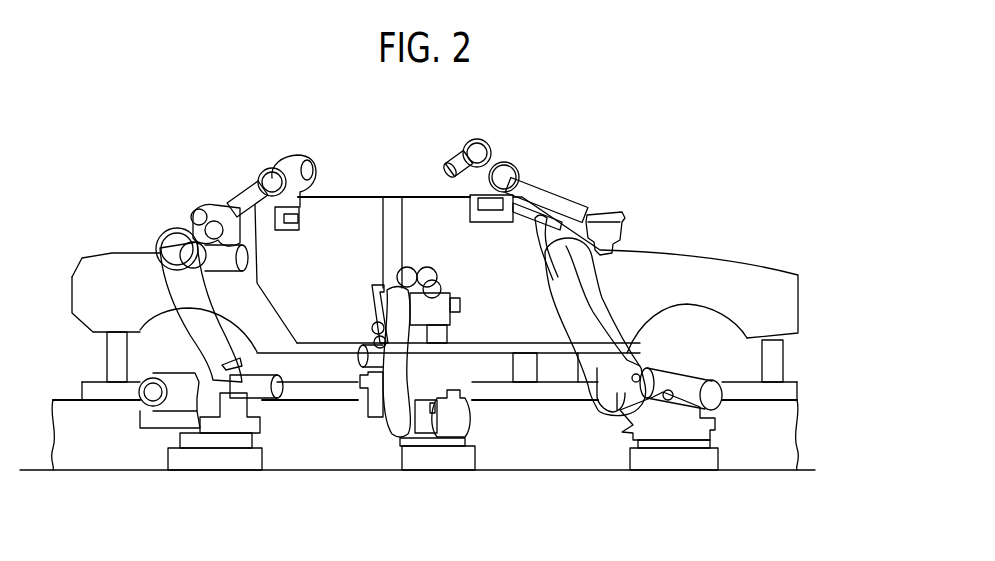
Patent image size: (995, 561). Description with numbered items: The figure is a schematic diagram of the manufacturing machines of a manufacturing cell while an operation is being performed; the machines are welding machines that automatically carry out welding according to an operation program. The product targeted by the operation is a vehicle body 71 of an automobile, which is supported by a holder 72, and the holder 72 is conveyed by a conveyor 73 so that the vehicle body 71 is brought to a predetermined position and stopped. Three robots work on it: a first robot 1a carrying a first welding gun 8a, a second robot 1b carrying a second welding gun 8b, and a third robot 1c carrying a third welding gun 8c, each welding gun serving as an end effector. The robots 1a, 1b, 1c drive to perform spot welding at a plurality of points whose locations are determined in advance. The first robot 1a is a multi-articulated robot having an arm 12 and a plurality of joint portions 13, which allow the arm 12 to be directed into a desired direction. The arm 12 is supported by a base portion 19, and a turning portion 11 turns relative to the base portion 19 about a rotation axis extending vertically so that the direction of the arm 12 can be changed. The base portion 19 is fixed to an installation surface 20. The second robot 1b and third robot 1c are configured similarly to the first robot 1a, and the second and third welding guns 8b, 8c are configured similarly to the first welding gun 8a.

The first robot 1a is at (207, 208).
The second robot 1b is at (405, 348).
The third robot 1c is at (530, 152).
The first welding gun 8a is at (305, 200).
The second welding gun 8b is at (377, 393).
The third welding gun 8c is at (460, 175).
The turning portion 11 is at (240, 427).
The arm 12 is at (240, 195).
The joint portions 13 is at (160, 230).
The base portion 19 is at (210, 460).
The installation surface 20 is at (810, 465).
The vehicle body 71 is at (750, 273).
The holder 72 is at (777, 363).
The conveyor 73 is at (775, 432).